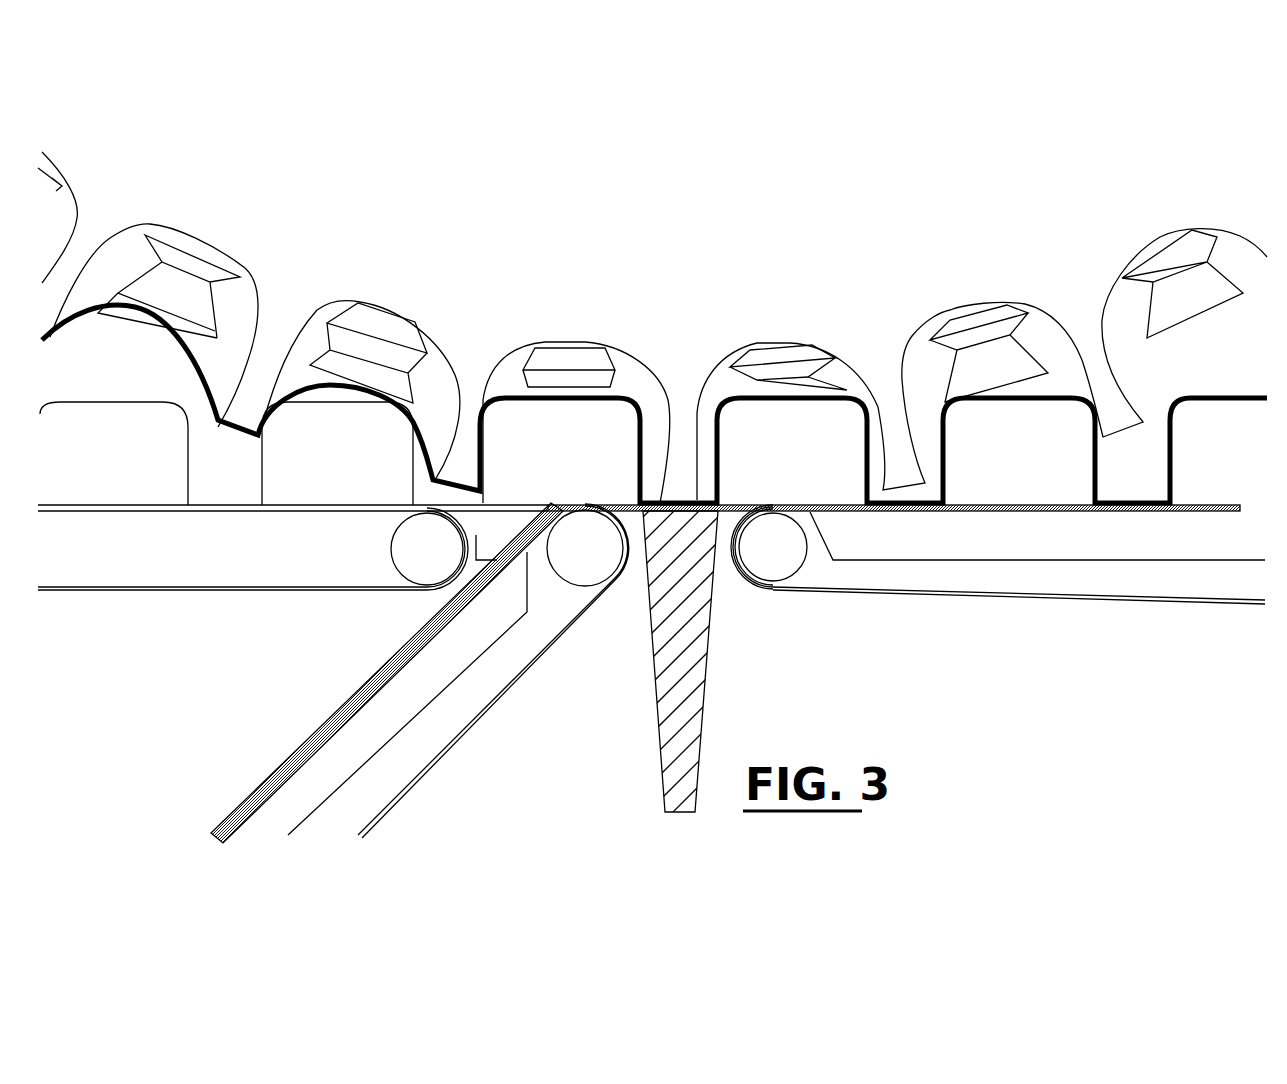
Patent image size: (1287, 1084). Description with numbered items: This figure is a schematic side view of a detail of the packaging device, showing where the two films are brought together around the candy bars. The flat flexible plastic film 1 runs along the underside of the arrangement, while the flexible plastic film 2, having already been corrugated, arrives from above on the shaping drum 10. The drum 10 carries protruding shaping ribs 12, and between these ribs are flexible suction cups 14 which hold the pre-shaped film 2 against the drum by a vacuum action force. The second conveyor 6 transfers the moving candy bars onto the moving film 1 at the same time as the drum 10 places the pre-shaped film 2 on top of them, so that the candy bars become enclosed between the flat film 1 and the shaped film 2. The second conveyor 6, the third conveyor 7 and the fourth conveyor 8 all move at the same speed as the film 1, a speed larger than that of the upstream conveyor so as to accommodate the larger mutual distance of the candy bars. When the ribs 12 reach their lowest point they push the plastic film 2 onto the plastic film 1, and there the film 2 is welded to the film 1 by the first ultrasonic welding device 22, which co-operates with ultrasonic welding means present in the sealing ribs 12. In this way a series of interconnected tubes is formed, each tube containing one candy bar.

The flexible plastic film 1 is at (385, 670).
The flexible plastic film 2 is at (97, 315).
The second conveyor 6 is at (214, 588).
The third conveyor 7 is at (1093, 600).
The fourth conveyor 8 is at (475, 717).
The shaping drum 10 is at (790, 244).
The shaping ribs 12 is at (682, 405).
The flexible suction cups 14 is at (192, 248).
The first ultrasonic welding device 22 is at (697, 648).